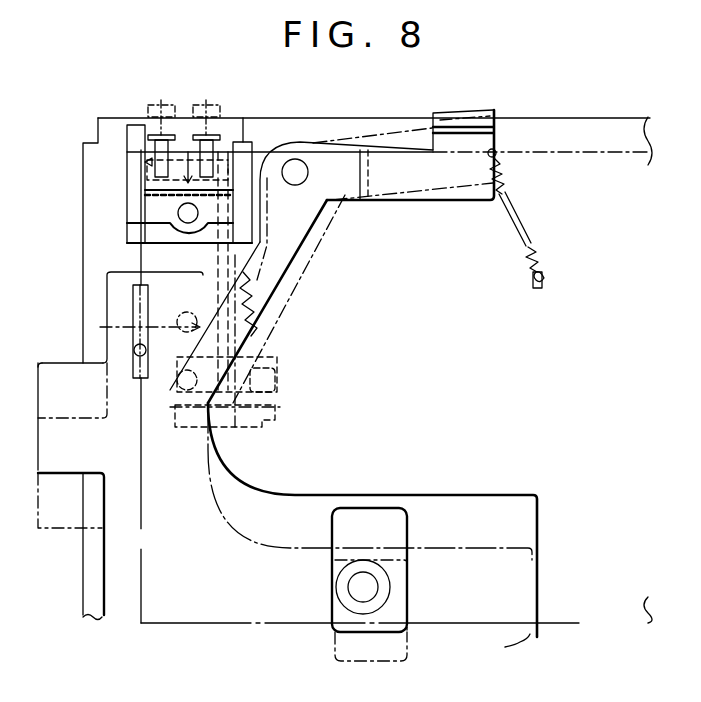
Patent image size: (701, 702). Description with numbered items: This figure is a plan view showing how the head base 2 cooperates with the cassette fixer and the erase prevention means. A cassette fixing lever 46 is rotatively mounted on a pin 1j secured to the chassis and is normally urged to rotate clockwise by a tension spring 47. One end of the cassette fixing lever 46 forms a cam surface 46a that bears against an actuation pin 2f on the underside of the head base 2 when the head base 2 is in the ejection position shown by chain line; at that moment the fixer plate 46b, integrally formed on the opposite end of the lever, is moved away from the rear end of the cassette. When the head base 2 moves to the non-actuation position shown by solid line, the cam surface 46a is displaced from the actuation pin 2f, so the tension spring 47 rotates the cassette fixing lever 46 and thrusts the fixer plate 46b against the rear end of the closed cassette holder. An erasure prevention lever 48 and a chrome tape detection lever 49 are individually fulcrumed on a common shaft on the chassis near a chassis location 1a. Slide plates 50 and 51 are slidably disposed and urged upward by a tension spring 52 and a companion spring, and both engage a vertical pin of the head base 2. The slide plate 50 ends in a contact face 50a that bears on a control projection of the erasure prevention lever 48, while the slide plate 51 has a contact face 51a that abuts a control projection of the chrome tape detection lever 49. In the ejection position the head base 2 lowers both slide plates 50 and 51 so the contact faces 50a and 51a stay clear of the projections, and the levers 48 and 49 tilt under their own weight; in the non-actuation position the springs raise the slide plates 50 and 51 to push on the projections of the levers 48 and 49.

The frame pin hole 1a is at (133, 348).
The pin 1j is at (293, 182).
The head base 2 is at (530, 590).
The actuation pin 2f is at (183, 320).
The cassette fixing lever 46 is at (343, 190).
The cam surface 46a is at (200, 395).
The fixer plate 46b is at (467, 125).
The tension spring 47 is at (508, 218).
The erasure prevention lever 48 is at (148, 134).
The chrome tape detection lever 49 is at (207, 134).
The slide plate 50 is at (246, 262).
The contact face 50a is at (130, 162).
The slide plate 51 is at (206, 280).
The contact face 51a is at (228, 145).
The tension spring 52 is at (256, 375).